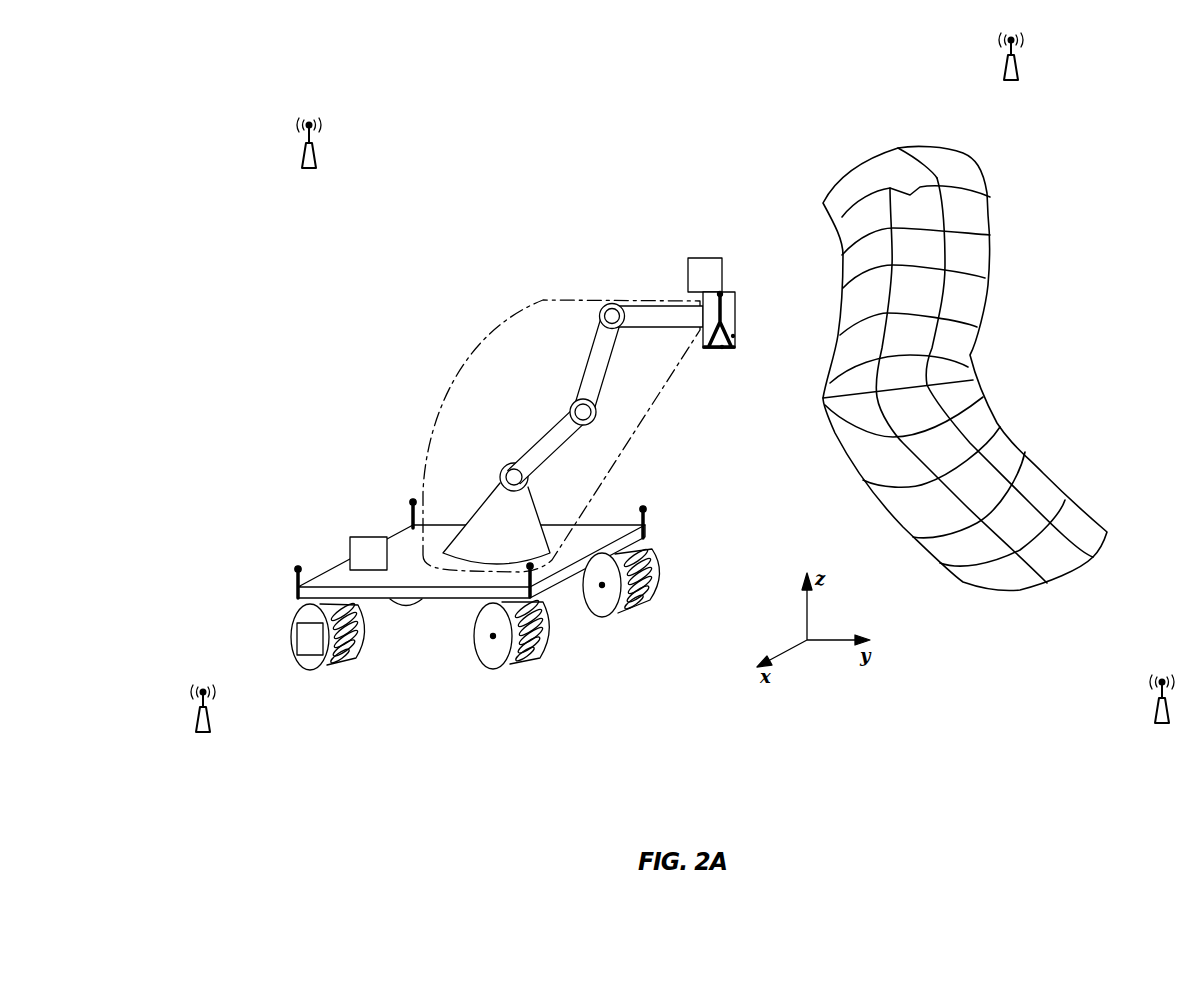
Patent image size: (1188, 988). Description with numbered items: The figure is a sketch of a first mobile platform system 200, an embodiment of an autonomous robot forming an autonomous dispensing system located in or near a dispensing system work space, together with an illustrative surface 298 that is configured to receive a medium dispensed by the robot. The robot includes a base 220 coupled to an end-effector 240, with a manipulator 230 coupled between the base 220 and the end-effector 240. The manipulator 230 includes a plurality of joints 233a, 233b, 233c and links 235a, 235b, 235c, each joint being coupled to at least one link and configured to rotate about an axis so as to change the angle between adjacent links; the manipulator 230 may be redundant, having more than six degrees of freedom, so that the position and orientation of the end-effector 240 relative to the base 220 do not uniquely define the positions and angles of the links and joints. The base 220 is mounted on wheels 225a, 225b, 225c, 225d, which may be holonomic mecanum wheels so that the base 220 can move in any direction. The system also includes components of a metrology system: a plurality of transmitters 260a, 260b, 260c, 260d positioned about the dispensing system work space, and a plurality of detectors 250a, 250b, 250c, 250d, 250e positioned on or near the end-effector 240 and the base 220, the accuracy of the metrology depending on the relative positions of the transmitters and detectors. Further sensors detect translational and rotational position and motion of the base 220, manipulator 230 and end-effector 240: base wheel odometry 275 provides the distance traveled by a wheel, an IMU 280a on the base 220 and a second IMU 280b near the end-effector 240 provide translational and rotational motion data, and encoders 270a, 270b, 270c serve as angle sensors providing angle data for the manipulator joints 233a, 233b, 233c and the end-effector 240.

The first mobile platform system 200 is at (284, 385).
The base 220 is at (327, 580).
The wheel 225a is at (353, 645).
The wheel 225b is at (543, 645).
The wheel 225c is at (600, 608).
The wheel 225d is at (407, 603).
The manipulator 230 is at (597, 488).
The joint 233a is at (500, 472).
The joint 233b is at (597, 420).
The joint 233c is at (598, 310).
The link 235a is at (533, 443).
The link 235b is at (582, 385).
The link 235c is at (637, 320).
The end-effector 240 is at (735, 323).
The detector 250a is at (723, 294).
The detector 250b is at (722, 349).
The detector 250c is at (735, 336).
The detector 250d is at (647, 538).
The position sensor 250e is at (297, 597).
The transmitter 260a is at (320, 162).
The transmitter 260b is at (1003, 65).
The transmitter 260c is at (1155, 710).
The transmitter 260d is at (212, 720).
The encoder 270a is at (505, 491).
The encoder 270b is at (573, 407).
The encoder 270c is at (606, 305).
The odometry 275 is at (300, 633).
The IMU 280a is at (368, 545).
The IMU 280b is at (702, 265).
The surface 298 is at (1011, 353).